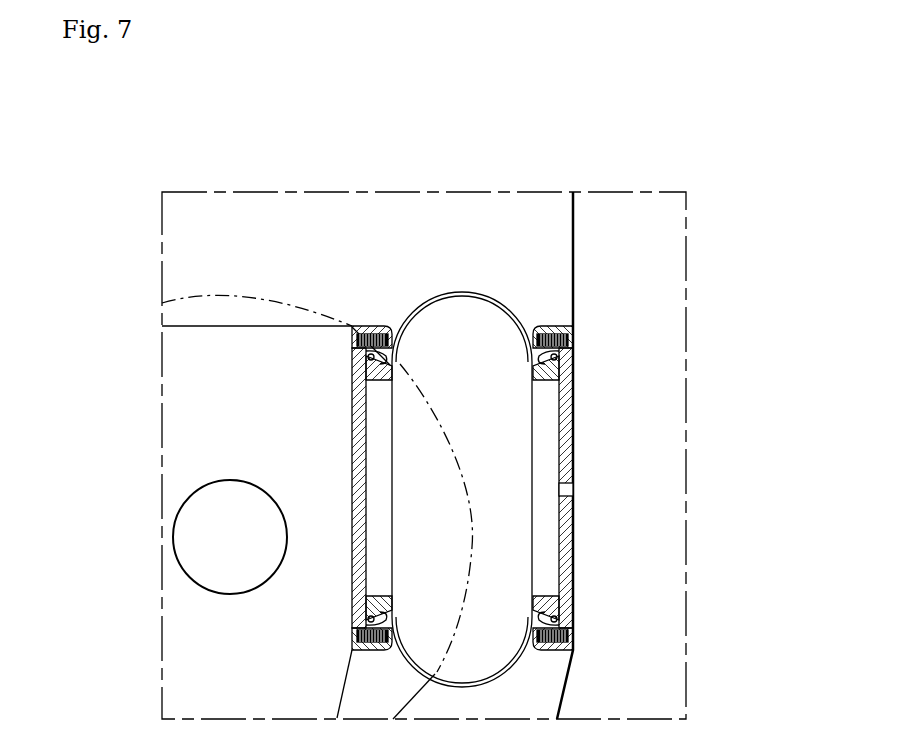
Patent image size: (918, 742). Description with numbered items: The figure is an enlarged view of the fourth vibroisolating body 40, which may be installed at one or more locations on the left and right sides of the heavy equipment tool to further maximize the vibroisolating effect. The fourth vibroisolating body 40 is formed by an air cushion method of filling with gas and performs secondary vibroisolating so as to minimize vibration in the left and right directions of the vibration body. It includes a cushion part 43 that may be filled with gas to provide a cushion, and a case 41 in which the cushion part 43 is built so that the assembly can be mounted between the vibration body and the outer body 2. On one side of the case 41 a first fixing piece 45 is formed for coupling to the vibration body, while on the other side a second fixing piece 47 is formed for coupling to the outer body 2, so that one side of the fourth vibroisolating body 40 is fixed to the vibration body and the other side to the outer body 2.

The outer body 2 is at (574, 241).
The fourth vibroisolating body 40 is at (507, 435).
The case 41 is at (468, 292).
The cushion part 43 is at (497, 330).
The first fixing piece 45 is at (352, 363).
The second fixing piece 47 is at (573, 362).